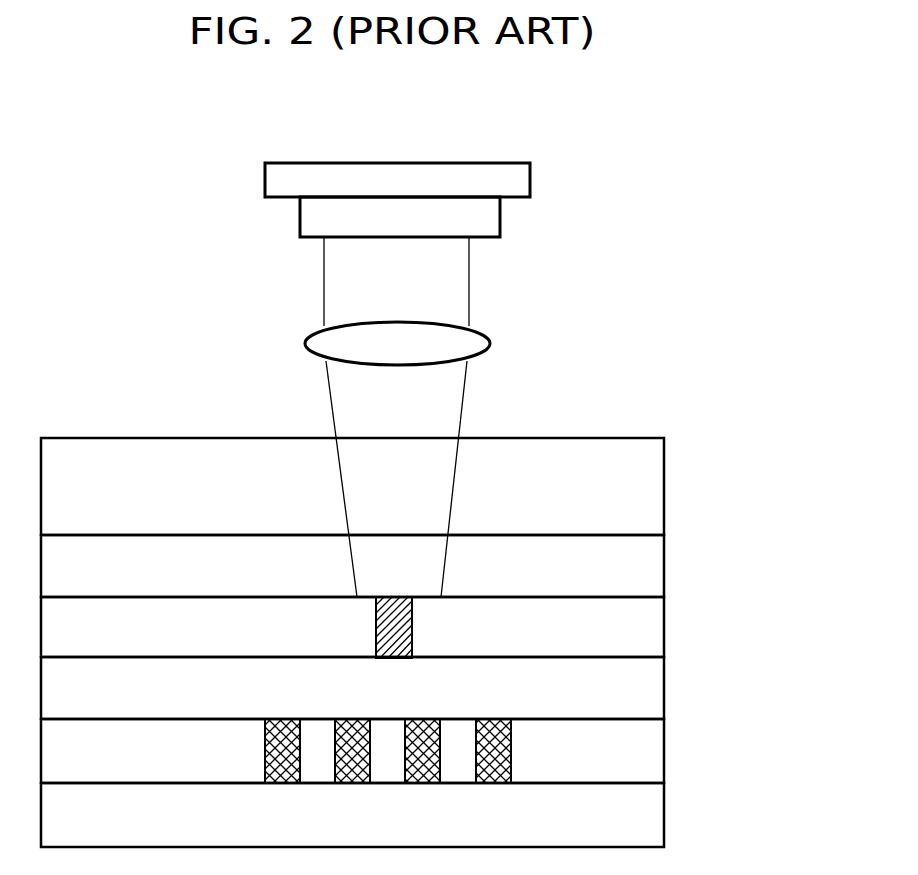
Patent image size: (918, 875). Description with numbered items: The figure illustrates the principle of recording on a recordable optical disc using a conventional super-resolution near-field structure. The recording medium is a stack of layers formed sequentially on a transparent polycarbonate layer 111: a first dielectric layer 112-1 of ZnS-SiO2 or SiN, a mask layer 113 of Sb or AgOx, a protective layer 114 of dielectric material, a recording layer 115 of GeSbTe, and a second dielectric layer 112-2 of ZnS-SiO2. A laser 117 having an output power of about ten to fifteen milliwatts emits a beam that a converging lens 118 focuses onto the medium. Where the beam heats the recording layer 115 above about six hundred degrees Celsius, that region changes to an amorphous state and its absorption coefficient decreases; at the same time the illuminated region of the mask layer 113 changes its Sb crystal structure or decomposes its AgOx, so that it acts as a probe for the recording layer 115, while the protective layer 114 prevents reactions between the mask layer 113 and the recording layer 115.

The transparent polycarbonate layer 111 is at (652, 486).
The first dielectric layer 112-1 is at (649, 566).
The mask layer 113 is at (649, 631).
The protective layer 114 is at (649, 694).
The recording layer 115 is at (649, 758).
The second dielectric layer 112-2 is at (649, 811).
The laser 117 is at (488, 223).
The converging lens 118 is at (490, 345).